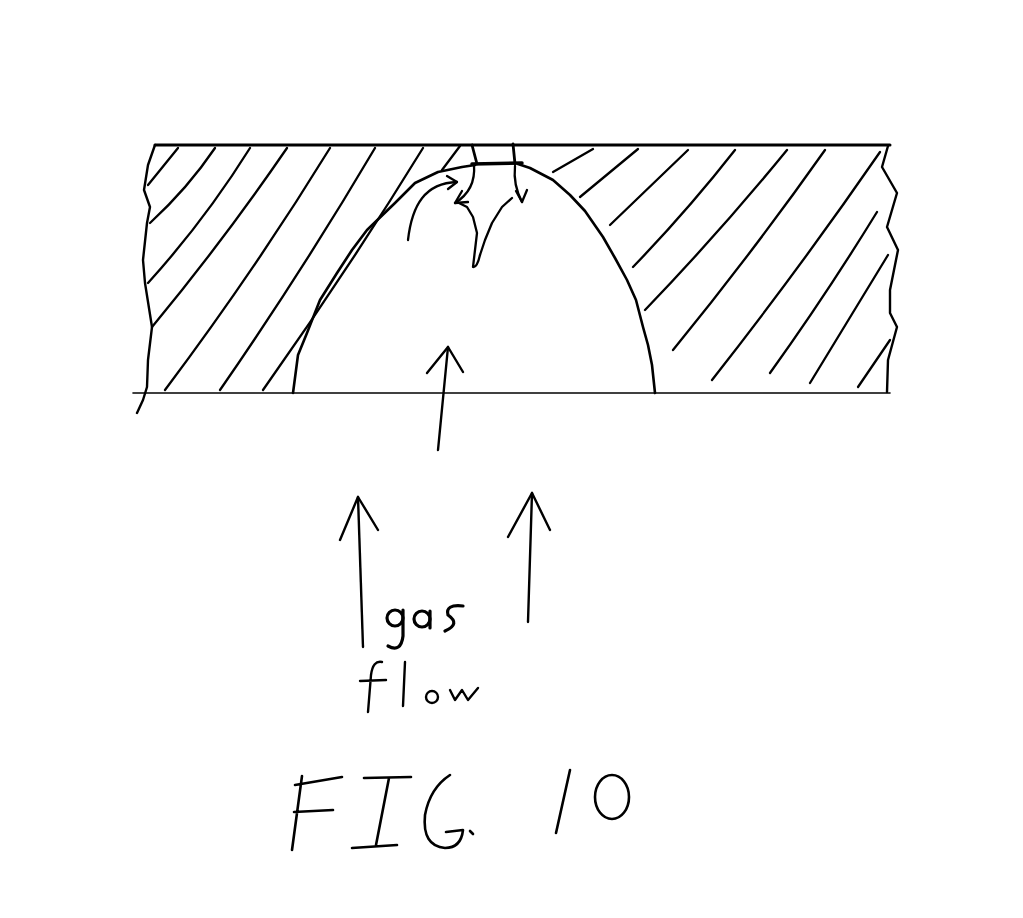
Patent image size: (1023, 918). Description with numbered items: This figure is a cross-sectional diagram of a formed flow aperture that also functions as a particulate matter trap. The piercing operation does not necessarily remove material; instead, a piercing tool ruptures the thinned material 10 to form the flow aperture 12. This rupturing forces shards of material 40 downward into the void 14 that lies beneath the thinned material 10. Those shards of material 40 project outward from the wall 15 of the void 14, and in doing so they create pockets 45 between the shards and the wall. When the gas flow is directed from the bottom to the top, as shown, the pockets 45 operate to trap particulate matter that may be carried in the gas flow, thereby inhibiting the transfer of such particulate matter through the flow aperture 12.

The thinned material 10 is at (830, 177).
The flow aperture 12 is at (492, 143).
The void 14 is at (452, 523).
The wall 15 is at (640, 305).
The shards of material 40 is at (476, 302).
The pockets 45 is at (420, 250).